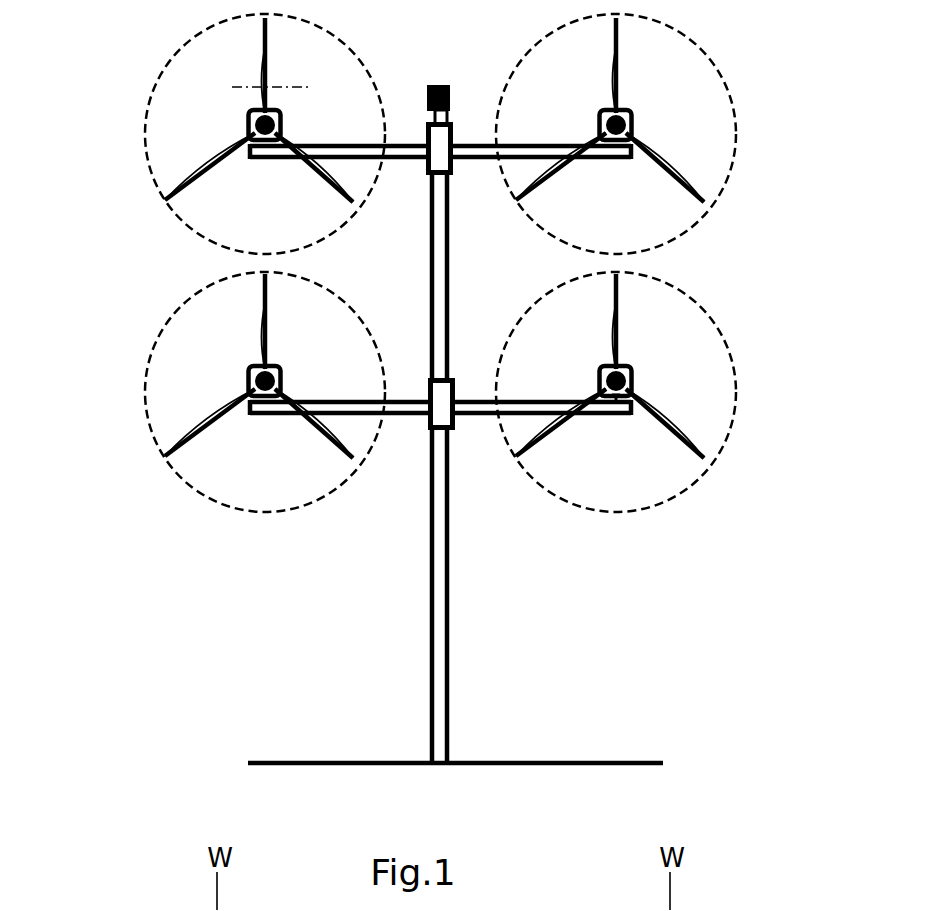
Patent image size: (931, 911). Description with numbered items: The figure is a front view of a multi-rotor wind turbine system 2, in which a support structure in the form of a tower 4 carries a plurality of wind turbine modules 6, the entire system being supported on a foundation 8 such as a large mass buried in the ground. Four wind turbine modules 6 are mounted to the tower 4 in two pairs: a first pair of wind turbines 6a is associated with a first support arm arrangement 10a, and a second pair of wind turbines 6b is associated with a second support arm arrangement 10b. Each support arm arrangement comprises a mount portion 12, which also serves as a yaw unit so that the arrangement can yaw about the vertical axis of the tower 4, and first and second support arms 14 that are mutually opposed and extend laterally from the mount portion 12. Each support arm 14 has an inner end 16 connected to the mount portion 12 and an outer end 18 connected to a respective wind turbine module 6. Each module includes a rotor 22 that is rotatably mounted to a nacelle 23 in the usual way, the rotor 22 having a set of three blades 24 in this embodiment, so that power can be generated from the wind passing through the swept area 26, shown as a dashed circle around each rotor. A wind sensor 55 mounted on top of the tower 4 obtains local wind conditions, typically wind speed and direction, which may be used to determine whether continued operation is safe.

The wind turbine system 2 is at (143, 630).
The tower 4 is at (432, 667).
The wind turbine module 6 is at (88, 230).
The first pair of wind turbines 6a is at (270, 170).
The second pair of wind turbines 6b is at (292, 371).
The foundation 8 is at (640, 762).
The first support arm arrangement 10a is at (403, 192).
The second support arm arrangement 10b is at (403, 438).
The mount portion 12 is at (442, 145).
The support arm 14 is at (487, 405).
The inner end 16 is at (449, 430).
The outer end 18 is at (635, 435).
The rotor 22 is at (658, 387).
The nacelle 23 is at (603, 441).
The blade 24 is at (586, 321).
The swept area 26 is at (155, 440).
The wind sensor 55 is at (430, 85).